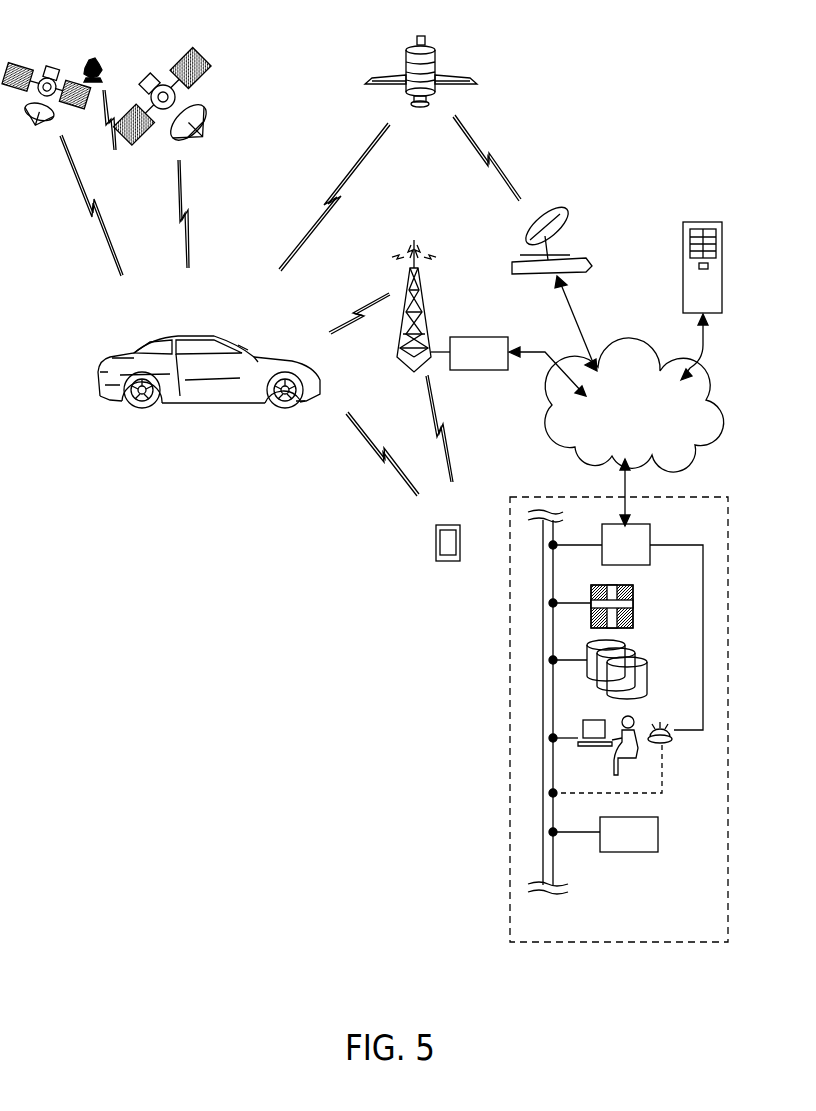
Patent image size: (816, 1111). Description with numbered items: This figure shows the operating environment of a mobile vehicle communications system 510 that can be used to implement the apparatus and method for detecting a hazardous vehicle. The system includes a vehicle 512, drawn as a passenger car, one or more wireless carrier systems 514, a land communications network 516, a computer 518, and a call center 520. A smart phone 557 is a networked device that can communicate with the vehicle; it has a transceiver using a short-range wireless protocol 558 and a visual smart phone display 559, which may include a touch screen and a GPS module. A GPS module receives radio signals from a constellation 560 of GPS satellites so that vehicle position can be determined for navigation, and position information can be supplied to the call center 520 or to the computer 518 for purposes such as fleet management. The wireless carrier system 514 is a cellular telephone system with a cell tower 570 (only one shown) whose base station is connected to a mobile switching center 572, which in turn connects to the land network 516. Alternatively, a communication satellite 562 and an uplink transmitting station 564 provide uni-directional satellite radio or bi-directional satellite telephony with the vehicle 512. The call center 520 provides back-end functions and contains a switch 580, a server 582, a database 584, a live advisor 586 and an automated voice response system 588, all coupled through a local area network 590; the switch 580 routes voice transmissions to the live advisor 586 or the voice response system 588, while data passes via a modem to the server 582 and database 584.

The mobile vehicle communications system 510 is at (633, 84).
The vehicle 512 is at (96, 382).
The wireless carrier system 514 is at (404, 382).
The land communications network 516 is at (713, 418).
The computer 518 is at (723, 283).
The call center 520 is at (608, 948).
The smart phone 557 is at (437, 556).
The short-range wireless protocol 558 is at (360, 418).
The smart phone display 559 is at (449, 550).
The constellation of GPS satellites 560 is at (236, 126).
The communication satellite 562 is at (440, 56).
The uplink transmitting station 564 is at (582, 250).
The cell tower 570 is at (424, 302).
The mobile switching center 572 is at (479, 372).
The switch 580 is at (628, 627).
The server 582 is at (636, 612).
The database 584 is at (647, 677).
The live advisor 586 is at (600, 767).
The automated voice response system 588 is at (658, 836).
The local area network 590 is at (555, 862).